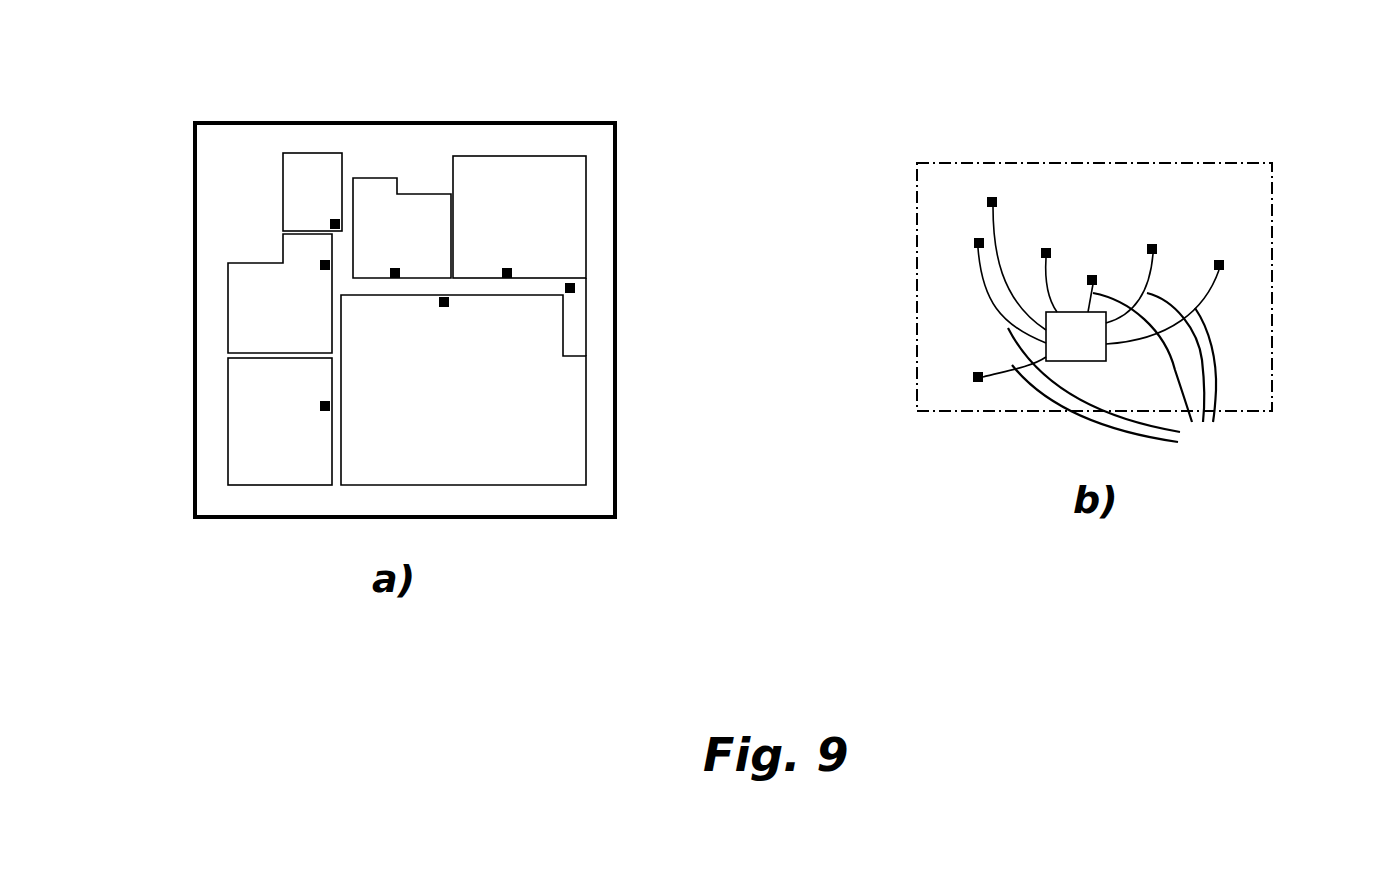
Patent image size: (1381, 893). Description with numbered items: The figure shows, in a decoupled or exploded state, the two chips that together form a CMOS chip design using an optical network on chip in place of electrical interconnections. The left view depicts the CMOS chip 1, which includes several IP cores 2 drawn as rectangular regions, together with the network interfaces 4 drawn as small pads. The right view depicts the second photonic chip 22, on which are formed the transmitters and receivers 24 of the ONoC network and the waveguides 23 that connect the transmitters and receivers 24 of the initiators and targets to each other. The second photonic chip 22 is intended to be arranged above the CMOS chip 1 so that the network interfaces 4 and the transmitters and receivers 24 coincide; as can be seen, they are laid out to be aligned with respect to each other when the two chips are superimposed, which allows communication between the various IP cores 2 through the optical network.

In FIG. 9a, the CMOS chip 1 is at (460, 122).
In FIG. 9a, the IP cores 2 is at (318, 200).
In FIG. 9a, the network interfaces 4 is at (330, 263).
In FIG. 9b, the second photonic chip 22 is at (1145, 163).
In FIG. 9b, the waveguides 23 is at (1102, 332).
In FIG. 9b, the transmitters and receivers 24 is at (979, 243).